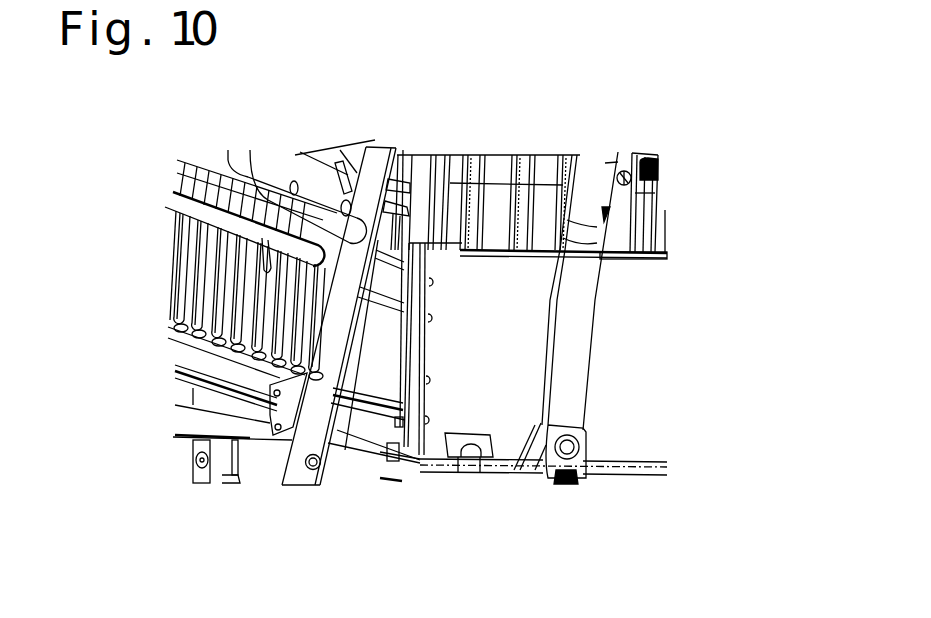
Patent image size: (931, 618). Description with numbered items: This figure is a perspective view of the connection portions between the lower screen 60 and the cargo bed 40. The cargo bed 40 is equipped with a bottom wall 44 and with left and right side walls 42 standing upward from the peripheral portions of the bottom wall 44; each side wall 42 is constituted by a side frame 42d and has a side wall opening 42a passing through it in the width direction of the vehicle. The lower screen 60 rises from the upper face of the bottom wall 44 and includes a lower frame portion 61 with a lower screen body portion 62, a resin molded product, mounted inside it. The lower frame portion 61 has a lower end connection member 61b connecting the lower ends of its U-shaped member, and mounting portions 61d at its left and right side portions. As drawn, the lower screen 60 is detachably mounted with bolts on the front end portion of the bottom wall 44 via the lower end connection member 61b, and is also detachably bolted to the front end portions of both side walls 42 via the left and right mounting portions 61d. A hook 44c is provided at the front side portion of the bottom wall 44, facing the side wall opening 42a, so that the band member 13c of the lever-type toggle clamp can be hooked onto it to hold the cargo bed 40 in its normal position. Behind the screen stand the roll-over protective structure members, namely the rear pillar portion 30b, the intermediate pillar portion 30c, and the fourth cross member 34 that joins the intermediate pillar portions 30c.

The fourth cross member 34 is at (203, 197).
The lower screen 60 is at (188, 243).
The lower screen body portion 62 is at (202, 278).
The lower frame portion 61 is at (405, 163).
The lower end connection member 61b is at (186, 374).
The mounting portions 61d is at (405, 403).
The bottom wall 44 is at (244, 400).
The hooks 44c is at (468, 450).
The band member 13c is at (490, 460).
The side walls 42 is at (487, 297).
The side wall openings 42a is at (487, 443).
The side frames 42d is at (597, 472).
The cargo bed 40 is at (535, 143).
The rear pillar portion 30b is at (633, 158).
The intermediate pillar portion 30c is at (347, 162).